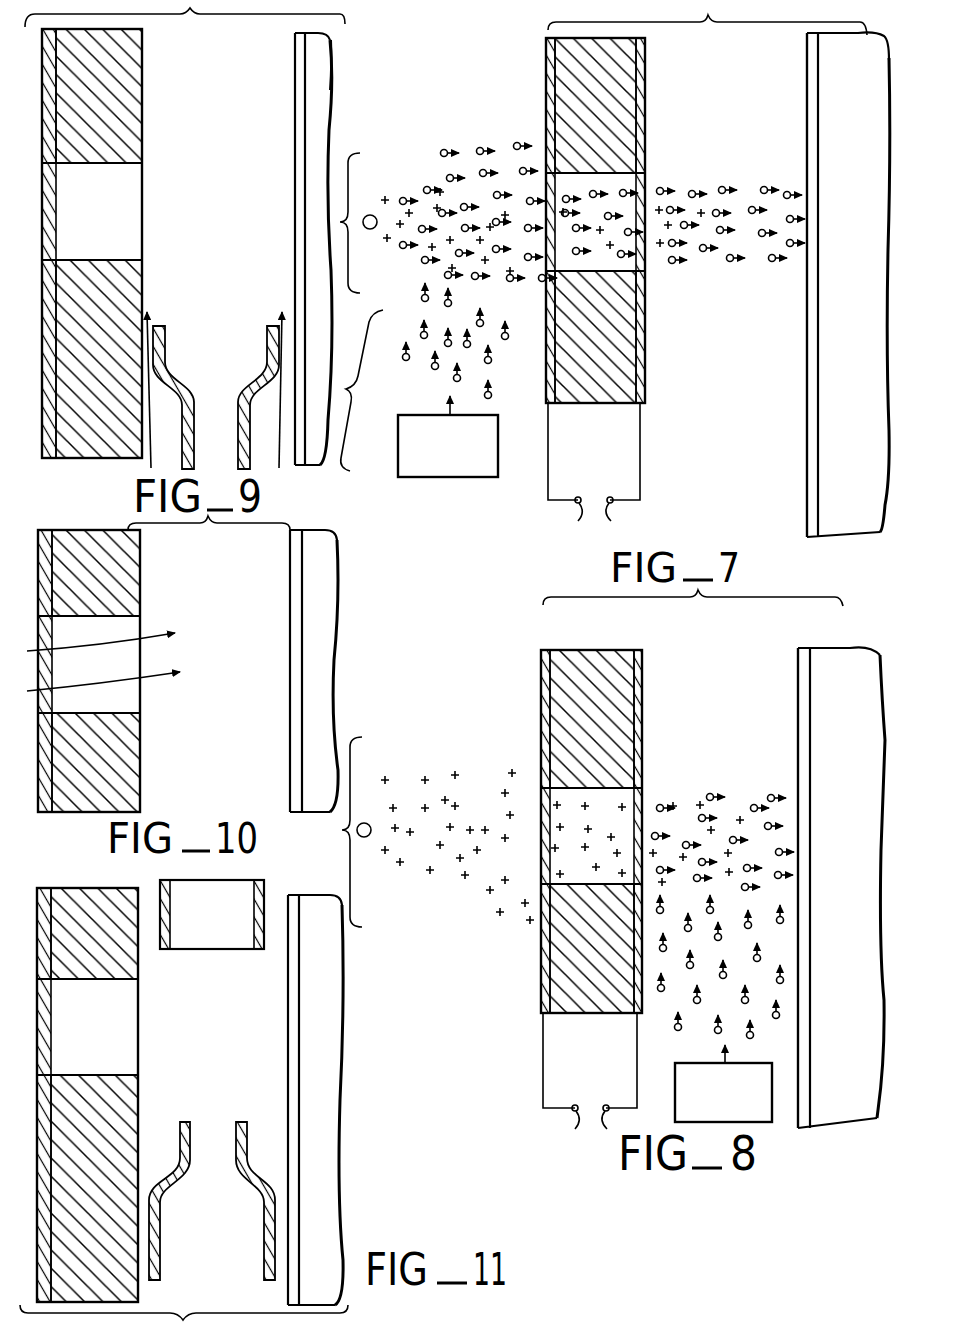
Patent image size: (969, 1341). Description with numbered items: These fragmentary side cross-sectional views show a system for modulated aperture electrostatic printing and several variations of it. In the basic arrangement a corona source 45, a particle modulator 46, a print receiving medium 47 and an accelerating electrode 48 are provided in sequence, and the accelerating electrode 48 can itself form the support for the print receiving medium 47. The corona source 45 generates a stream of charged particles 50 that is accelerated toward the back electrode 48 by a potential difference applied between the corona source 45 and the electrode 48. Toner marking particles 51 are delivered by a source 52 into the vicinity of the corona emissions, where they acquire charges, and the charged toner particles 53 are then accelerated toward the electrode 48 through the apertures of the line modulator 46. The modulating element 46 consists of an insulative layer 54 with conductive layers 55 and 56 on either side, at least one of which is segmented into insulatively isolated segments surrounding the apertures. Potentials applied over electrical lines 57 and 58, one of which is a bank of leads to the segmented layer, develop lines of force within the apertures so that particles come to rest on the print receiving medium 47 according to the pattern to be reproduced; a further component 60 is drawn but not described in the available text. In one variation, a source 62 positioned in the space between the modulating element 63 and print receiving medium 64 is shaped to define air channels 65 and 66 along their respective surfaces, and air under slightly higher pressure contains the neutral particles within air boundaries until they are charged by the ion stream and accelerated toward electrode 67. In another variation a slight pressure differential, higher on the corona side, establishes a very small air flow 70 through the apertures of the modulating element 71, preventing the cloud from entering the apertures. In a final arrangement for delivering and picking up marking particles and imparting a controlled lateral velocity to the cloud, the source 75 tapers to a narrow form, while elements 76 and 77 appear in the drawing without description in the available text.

In FIG. 7, the corona source 45 is at (368, 214).
In FIG. 8, the corona source 45 is at (366, 822).
In FIG. 7, the particle modulator 46 is at (590, 265).
In FIG. 8, the particle modulator 46 is at (587, 647).
In FIG. 7, the print receiving medium 47 is at (811, 50).
In FIG. 8, the print receiving medium 47 is at (805, 655).
In FIG. 7, the accelerating electrode 48 is at (835, 80).
In FIG. 8, the accelerating electrode 48 is at (853, 670).
In FIG. 7, the stream of charged particles 50 is at (387, 195).
In FIG. 8, the stream of charged particles 50 is at (420, 805).
In FIG. 7, the toner marking particles 51 is at (454, 380).
In FIG. 8, the toner marking particles 51 is at (717, 1030).
In FIG. 7, the source 52 is at (398, 452).
In FIG. 7, the charged toner particles 53 is at (514, 146).
In FIG. 8, the charged toner particles 53 is at (688, 780).
In FIG. 7, the insulative layer 54 is at (620, 64).
In FIG. 7, the conductive layer 55 is at (546, 62).
In FIG. 7, the conductive layer 56 is at (645, 80).
In FIG. 7, the electrical line 57 is at (567, 518).
In FIG. 8, the electrical line 57 is at (558, 1125).
In FIG. 7, the electrical line 58 is at (628, 518).
In FIG. 8, the electrical line 58 is at (596, 1127).
In FIG. 8, the ink supply 60 is at (675, 1100).
In FIG. 9, the source 62 is at (177, 384).
In FIG. 9, the modulating element 63 is at (92, 165).
In FIG. 9, the print receiving medium 64 is at (295, 66).
In FIG. 9, the air passageway 65 is at (163, 390).
In FIG. 9, the air passageway 66 is at (268, 390).
In FIG. 9, the electrode 67 is at (331, 90).
In FIG. 10, the air flow 70 is at (108, 642).
In FIG. 10, the modulating element 71 is at (105, 545).
In FIG. 11, the source 75 is at (178, 1140).
In FIG. 11, the shutter block 76 is at (250, 892).
In FIG. 11, the recording medium 77 is at (298, 897).